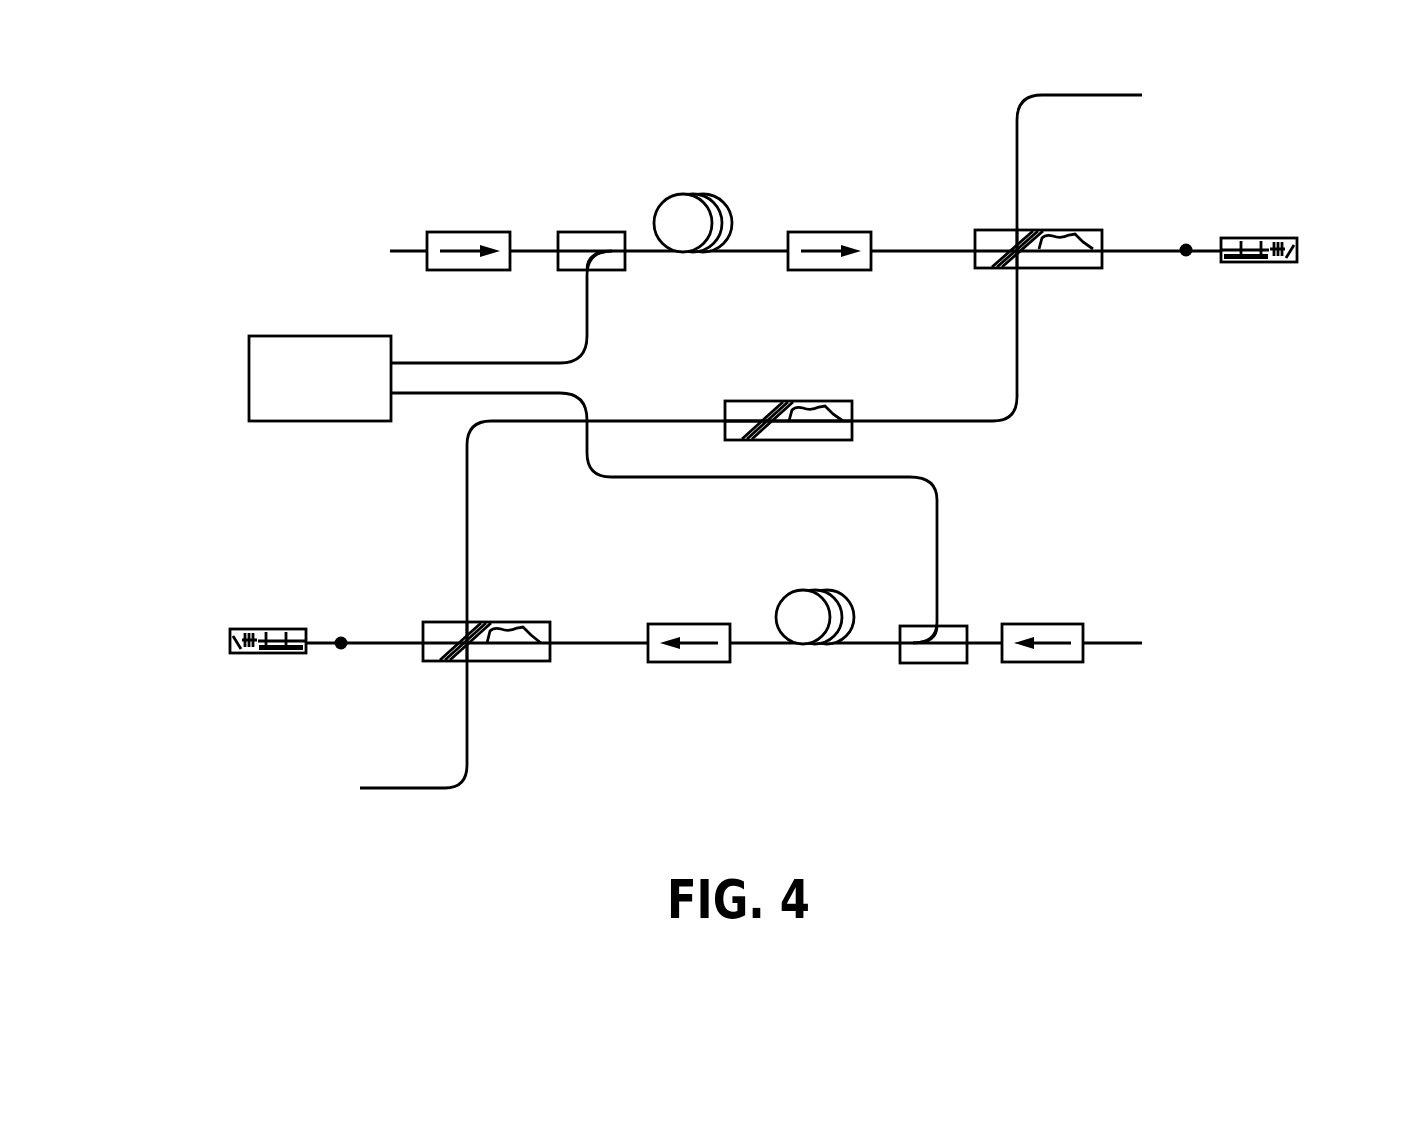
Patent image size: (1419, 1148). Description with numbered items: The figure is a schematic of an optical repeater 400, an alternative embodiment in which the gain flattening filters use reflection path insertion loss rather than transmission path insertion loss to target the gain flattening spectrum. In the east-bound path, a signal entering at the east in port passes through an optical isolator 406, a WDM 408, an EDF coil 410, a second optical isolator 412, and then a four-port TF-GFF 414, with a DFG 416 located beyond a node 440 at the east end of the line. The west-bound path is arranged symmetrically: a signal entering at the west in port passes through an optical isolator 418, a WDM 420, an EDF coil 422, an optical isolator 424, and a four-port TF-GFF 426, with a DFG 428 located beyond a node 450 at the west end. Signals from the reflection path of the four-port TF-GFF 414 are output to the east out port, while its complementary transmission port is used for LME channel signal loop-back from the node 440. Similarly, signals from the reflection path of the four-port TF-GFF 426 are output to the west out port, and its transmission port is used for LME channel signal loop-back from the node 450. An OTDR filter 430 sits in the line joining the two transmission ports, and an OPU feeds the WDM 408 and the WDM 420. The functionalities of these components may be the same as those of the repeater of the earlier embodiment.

The optical repeater 400 is at (752, 462).
The optical isolator 406 is at (468, 279).
The WDM 408 is at (591, 225).
The EDF coil 410 is at (695, 200).
The optical isolator 412 is at (829, 279).
The 4-port TF-GFF 414 is at (1063, 224).
The DFG 416 is at (1258, 234).
The optical isolator 418 is at (1042, 671).
The WDM 420 is at (933, 672).
The EDF coil 422 is at (816, 591).
The optical isolator 424 is at (689, 671).
The 4-port TF-GFF 426 is at (506, 666).
The DFG 428 is at (268, 656).
The OTDR filter 430 is at (787, 434).
The node 440 is at (1186, 272).
The node 450 is at (345, 626).